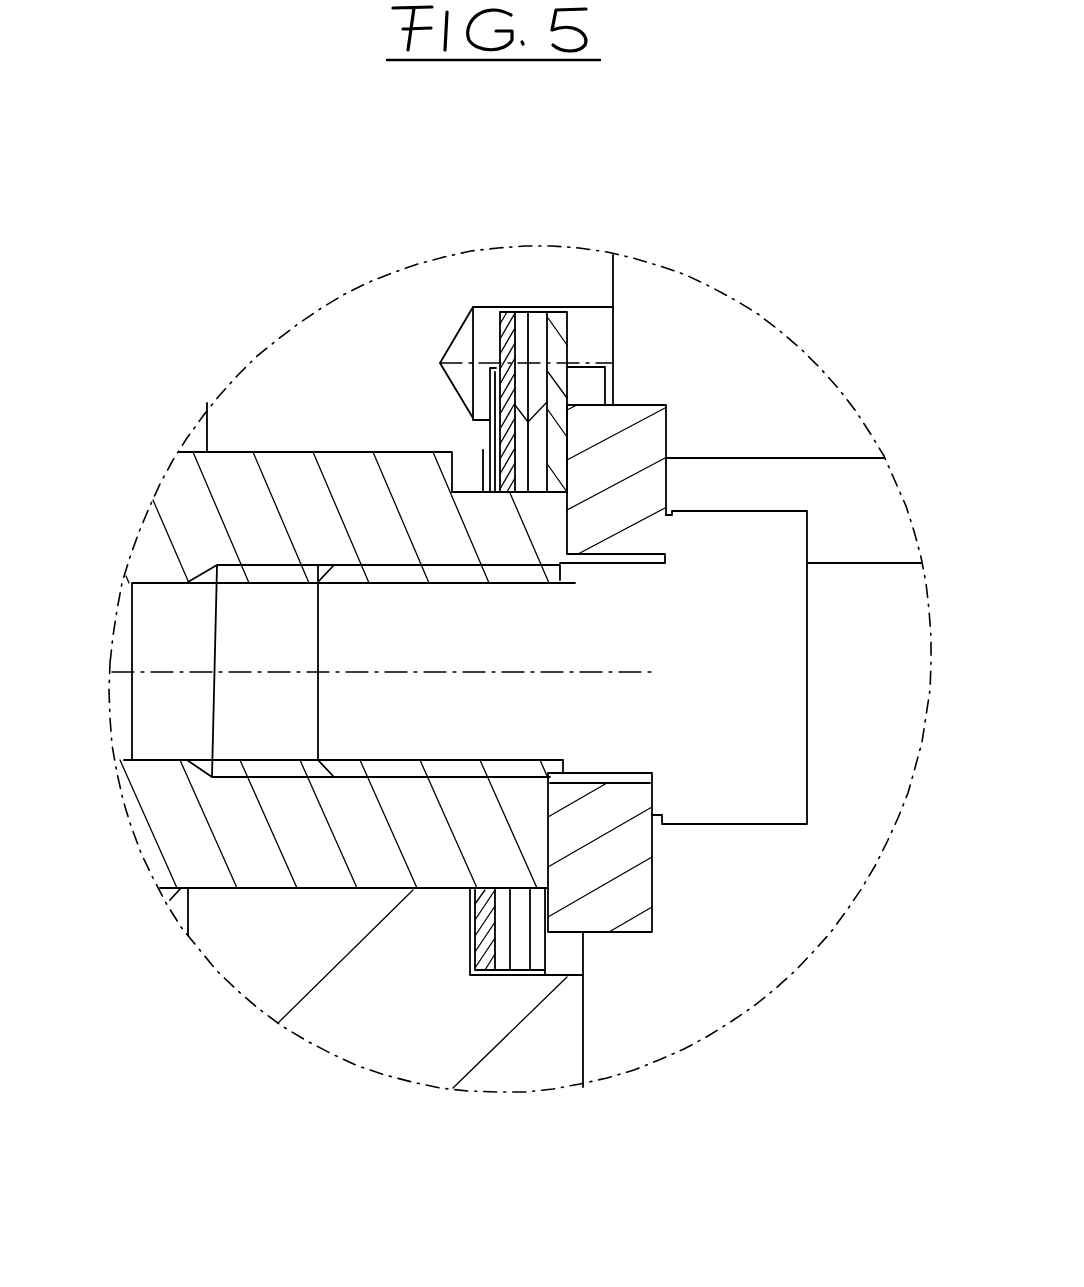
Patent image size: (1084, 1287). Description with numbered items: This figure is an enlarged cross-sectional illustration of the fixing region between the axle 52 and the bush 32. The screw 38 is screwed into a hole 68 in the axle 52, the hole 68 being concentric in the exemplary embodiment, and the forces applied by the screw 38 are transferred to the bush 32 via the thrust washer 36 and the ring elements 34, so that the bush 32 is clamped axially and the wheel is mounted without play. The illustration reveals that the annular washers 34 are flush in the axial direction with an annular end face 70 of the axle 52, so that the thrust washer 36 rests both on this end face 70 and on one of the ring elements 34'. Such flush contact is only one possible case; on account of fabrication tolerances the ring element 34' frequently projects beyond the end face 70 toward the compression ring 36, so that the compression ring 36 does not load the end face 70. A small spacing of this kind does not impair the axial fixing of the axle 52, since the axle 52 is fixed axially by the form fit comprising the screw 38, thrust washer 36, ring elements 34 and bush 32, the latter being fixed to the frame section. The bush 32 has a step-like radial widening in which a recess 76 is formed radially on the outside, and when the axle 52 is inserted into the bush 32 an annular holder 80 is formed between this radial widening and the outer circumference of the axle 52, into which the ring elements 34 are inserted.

The bush 32 is at (375, 343).
The ring elements 34 is at (526, 320).
The ring element 34' is at (529, 1030).
The thrust washer 36 is at (648, 440).
The screw 38 is at (771, 682).
The axle 52 is at (330, 843).
The hole 68 is at (298, 765).
The annular end face 70 is at (550, 835).
The recess 76 is at (591, 306).
The annular holder 80 is at (565, 953).